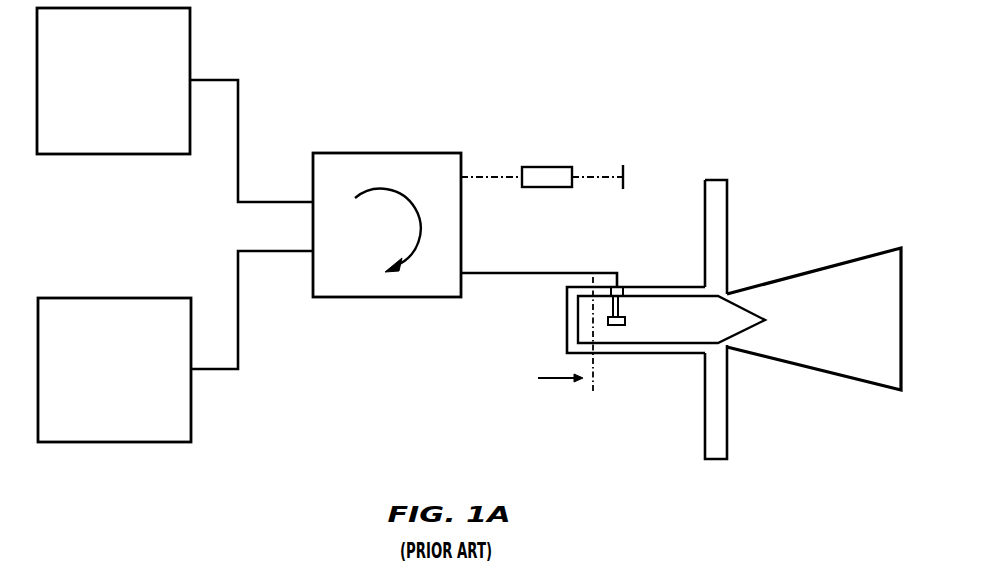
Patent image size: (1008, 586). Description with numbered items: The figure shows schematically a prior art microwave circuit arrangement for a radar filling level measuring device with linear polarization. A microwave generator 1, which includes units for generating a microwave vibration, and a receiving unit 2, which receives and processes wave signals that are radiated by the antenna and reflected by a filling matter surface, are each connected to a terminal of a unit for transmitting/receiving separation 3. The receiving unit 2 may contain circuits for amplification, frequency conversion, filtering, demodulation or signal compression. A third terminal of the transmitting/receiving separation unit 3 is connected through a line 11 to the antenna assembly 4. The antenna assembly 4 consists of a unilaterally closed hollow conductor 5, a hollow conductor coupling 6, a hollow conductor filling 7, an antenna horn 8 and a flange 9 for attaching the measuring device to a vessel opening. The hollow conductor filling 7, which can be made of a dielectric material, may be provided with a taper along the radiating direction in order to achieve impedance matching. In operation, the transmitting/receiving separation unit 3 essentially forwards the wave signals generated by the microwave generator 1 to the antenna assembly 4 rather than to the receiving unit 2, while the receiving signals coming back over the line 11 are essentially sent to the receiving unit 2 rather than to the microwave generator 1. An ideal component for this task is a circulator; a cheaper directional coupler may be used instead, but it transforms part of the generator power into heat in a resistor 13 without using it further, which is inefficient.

The microwave generator 1 is at (192, 42).
The receiving unit 2 is at (192, 407).
The transmitting/receiving separation unit 3 is at (387, 205).
The antenna assembly 4 is at (748, 230).
The hollow conductor 5 is at (638, 345).
The hollow conductor coupling 6 is at (628, 273).
The hollow conductor filling 7 is at (685, 328).
The antenna horn 8 is at (827, 377).
The flange 9 is at (722, 403).
The line 11 is at (542, 275).
The resistor 13 is at (538, 162).